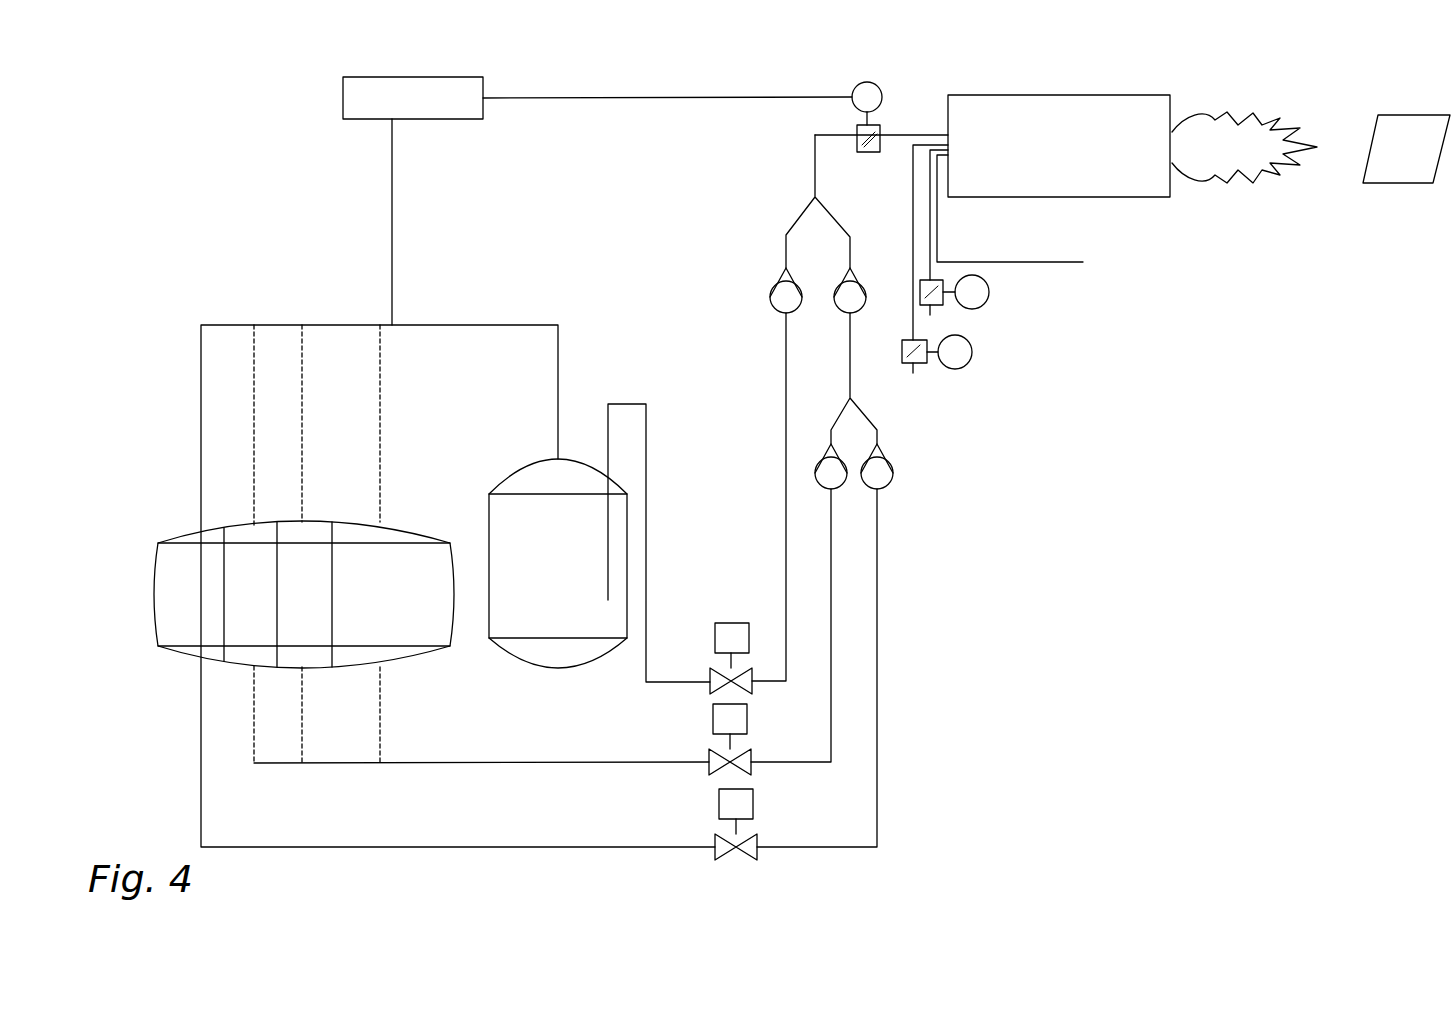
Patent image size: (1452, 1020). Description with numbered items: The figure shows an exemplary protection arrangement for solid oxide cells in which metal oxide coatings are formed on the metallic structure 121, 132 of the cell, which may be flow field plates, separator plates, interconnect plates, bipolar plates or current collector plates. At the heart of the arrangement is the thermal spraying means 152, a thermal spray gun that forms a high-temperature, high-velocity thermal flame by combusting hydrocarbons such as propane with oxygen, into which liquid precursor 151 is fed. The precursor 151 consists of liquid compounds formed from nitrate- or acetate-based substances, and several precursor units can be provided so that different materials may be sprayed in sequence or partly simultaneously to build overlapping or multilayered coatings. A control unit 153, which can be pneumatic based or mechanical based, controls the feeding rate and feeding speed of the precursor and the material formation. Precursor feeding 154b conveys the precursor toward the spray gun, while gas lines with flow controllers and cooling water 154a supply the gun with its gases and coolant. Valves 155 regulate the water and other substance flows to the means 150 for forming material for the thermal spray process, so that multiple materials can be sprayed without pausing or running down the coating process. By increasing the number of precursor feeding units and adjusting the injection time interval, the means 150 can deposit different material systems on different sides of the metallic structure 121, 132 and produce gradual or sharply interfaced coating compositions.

The means for forming material for the thermal spray process 150 is at (672, 322).
The liquid precursor 151 is at (405, 668).
The thermal spraying means 152 is at (1180, 120).
The control unit 153 is at (400, 76).
The gas lines with flow controllers and cooling water 154a is at (1100, 328).
The precursor feeding 154b is at (880, 118).
The valves 155 is at (700, 675).
The metallic structure 121 is at (1406, 214).
The metallic structure 132 is at (1395, 185).